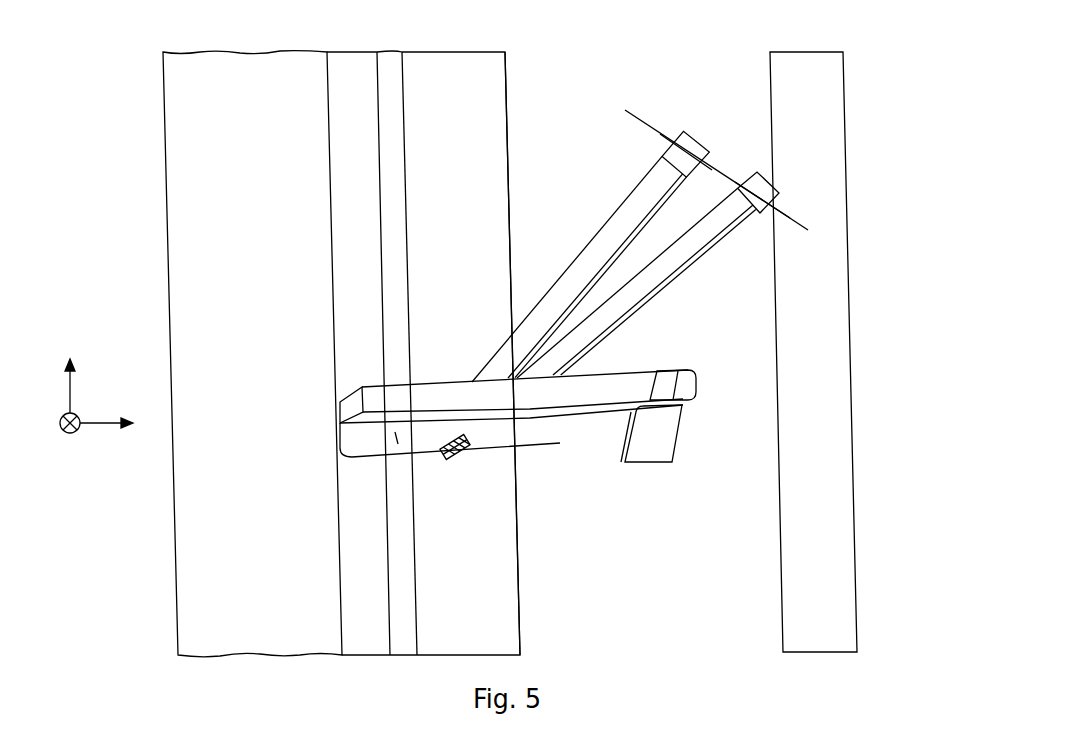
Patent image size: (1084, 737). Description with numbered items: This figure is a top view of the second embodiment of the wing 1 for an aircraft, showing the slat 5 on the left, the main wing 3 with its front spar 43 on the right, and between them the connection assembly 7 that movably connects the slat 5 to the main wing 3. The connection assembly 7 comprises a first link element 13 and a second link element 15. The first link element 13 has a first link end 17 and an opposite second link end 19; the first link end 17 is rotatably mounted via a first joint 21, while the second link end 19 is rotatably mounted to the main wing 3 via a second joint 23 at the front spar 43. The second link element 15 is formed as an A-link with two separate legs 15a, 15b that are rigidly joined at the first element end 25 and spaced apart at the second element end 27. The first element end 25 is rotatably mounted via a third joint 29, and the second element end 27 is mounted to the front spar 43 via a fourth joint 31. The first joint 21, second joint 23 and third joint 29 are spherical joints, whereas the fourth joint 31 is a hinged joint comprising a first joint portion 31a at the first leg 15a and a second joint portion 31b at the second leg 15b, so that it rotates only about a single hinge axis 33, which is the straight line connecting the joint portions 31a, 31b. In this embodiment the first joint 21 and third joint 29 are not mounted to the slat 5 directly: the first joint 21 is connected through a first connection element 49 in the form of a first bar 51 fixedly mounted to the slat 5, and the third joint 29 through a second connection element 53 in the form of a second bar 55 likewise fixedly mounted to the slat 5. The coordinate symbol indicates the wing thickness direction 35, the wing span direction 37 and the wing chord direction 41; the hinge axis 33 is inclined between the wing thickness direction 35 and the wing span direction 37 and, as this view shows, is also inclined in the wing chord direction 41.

The wing 1 is at (110, 117).
The main wing 3 is at (677, 592).
The slat 5 is at (252, 293).
The connection assembly 7 is at (579, 116).
The first link element 13 is at (664, 472).
The second link element 15 is at (645, 219).
The first leg 15a is at (590, 219).
The second leg 15b is at (667, 275).
The first link end 17 is at (699, 413).
The second link end 19 is at (650, 472).
The first joint 21 is at (686, 371).
The second joint 23 is at (642, 468).
The first element end 25 is at (457, 424).
The second element end 27 is at (690, 132).
The third joint 29 is at (397, 436).
The fourth joint 31 is at (781, 120).
The first joint portion 31a is at (703, 137).
The second joint portion 31b is at (777, 193).
The hinge axis 33 is at (795, 228).
The wing thickness direction 35 is at (69, 438).
The wing span direction 37 is at (69, 372).
The wing chord direction 41 is at (122, 424).
The front spar 43 is at (828, 355).
The first connection element 49 is at (551, 463).
The first bar 51 is at (551, 463).
The second connection element 53 is at (450, 506).
The second bar 55 is at (390, 457).